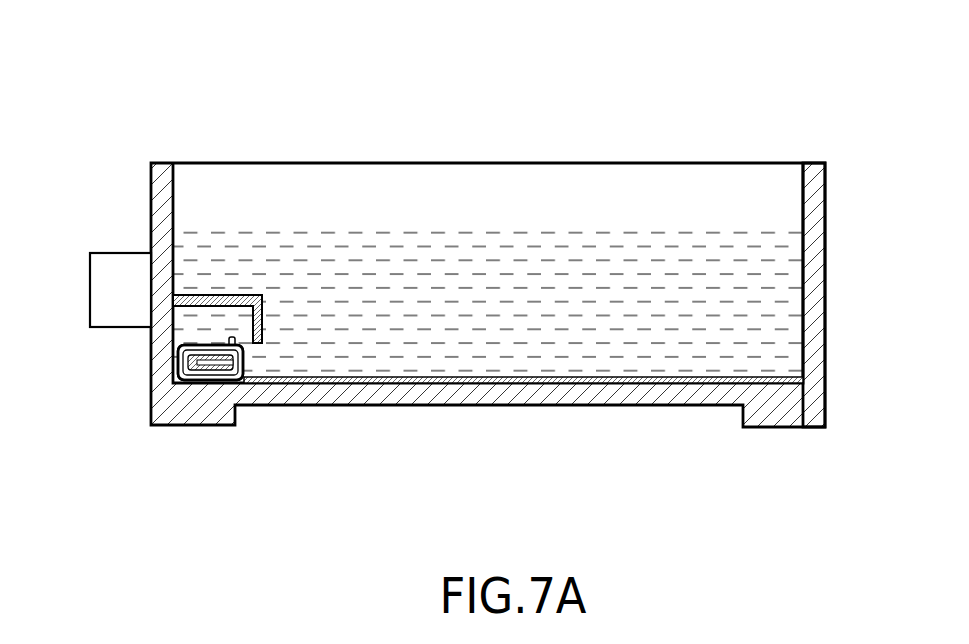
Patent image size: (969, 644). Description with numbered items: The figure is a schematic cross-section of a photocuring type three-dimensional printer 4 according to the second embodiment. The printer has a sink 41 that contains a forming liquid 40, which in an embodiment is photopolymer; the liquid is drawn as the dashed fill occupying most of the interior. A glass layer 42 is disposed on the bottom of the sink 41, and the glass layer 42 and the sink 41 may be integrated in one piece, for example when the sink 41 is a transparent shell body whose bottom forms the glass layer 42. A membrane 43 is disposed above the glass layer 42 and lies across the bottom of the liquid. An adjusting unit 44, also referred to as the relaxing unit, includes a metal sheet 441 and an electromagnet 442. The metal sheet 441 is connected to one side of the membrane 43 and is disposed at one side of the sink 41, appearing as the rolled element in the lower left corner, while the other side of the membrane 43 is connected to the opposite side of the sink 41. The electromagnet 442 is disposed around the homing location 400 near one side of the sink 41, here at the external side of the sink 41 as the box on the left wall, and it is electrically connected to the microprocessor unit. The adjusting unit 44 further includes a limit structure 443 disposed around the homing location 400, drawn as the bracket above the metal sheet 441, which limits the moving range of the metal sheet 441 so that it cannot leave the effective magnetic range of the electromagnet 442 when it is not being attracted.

The 3D printer 4 is at (470, 44).
The forming liquid 40 is at (735, 253).
The sink 41 is at (813, 185).
The glass layer 42 is at (435, 393).
The membrane 43 is at (617, 377).
The adjusting unit 44 is at (225, 103).
The metal sheet 441 is at (203, 348).
The electromagnet 442 is at (110, 278).
The limit structure 443 is at (227, 300).
The homing location 400 is at (204, 392).